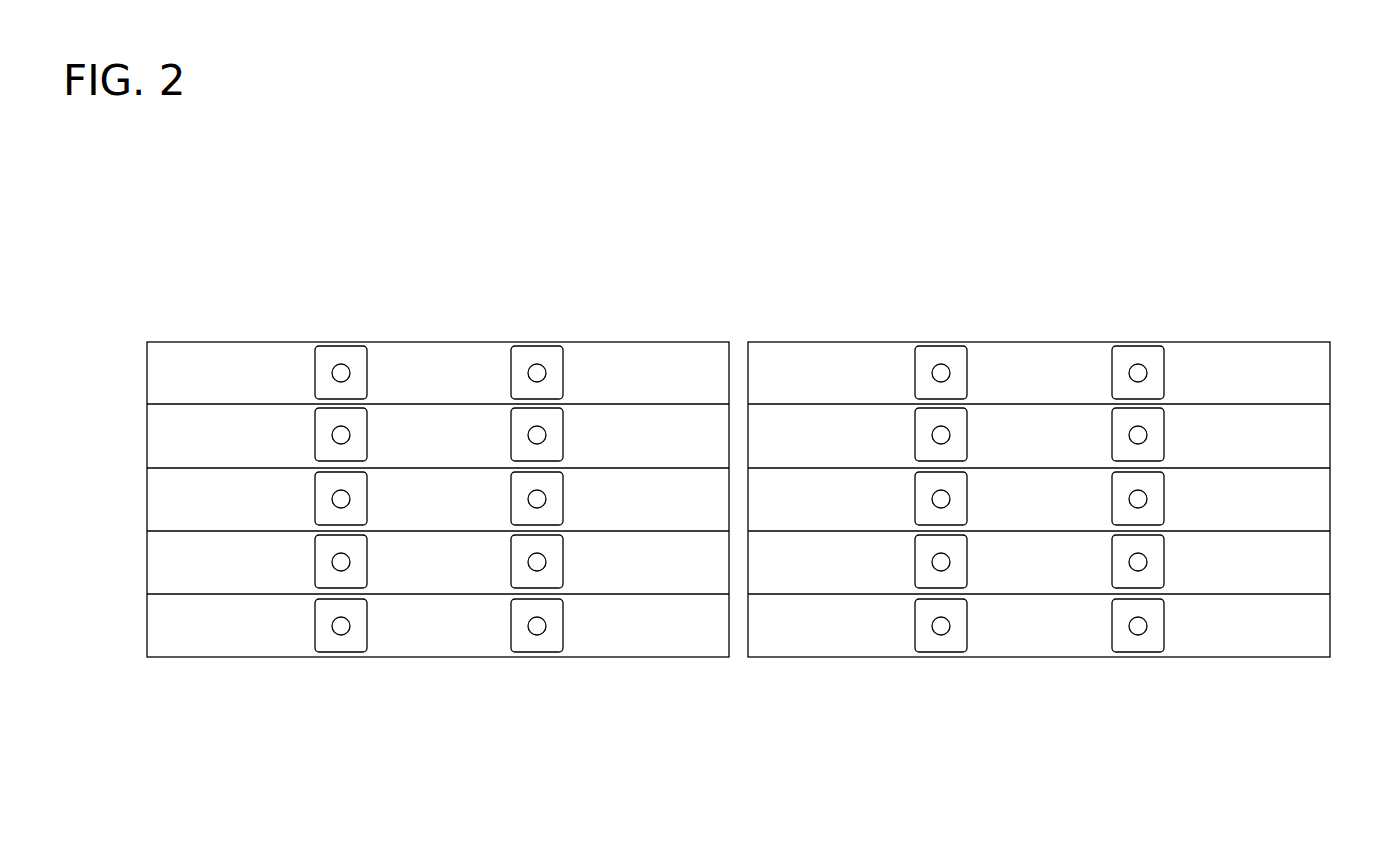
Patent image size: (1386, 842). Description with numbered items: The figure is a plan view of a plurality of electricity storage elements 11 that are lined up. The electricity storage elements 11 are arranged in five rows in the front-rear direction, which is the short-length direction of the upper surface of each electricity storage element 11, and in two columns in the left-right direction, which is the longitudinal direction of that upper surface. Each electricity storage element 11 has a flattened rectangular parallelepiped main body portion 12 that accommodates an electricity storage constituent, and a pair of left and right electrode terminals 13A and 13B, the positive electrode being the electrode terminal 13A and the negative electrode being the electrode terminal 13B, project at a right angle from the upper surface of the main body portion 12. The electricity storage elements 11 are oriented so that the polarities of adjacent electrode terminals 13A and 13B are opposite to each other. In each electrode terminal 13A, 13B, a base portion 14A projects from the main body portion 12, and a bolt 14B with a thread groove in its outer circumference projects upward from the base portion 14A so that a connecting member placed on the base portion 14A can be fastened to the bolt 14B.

The electricity storage element 11 is at (132, 373).
The main body portion 12 is at (450, 355).
The electrode terminal 13A is at (358, 433).
The electrode terminal 13B is at (350, 355).
The base portion 14A is at (955, 352).
The bolt 14B is at (941, 362).